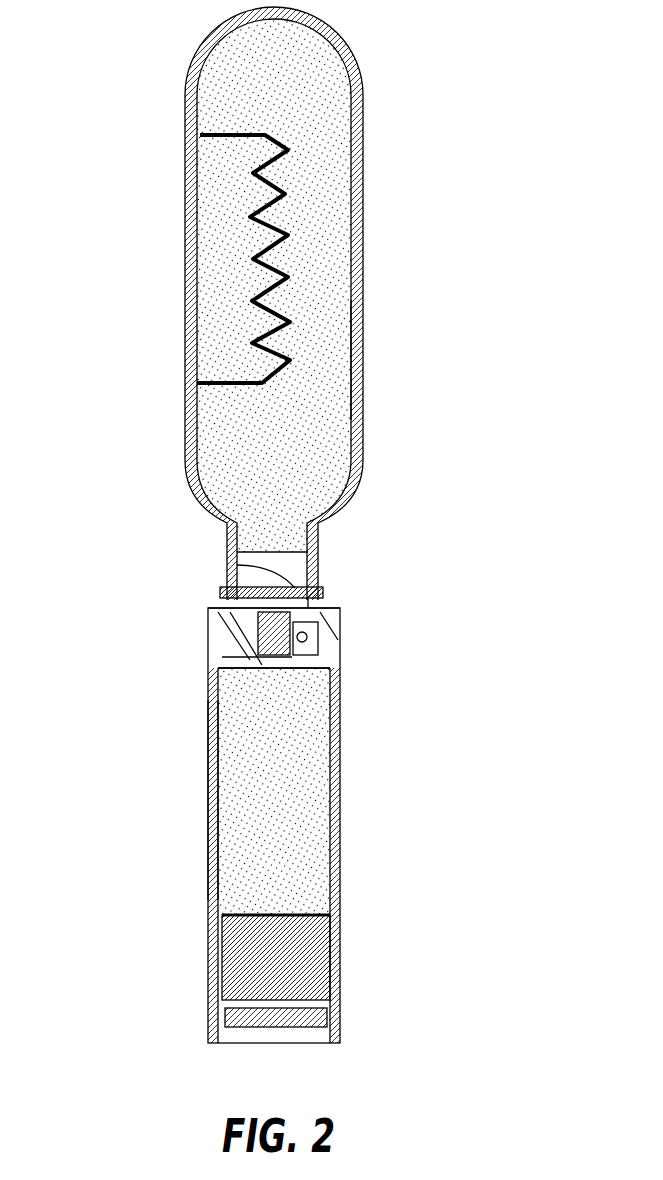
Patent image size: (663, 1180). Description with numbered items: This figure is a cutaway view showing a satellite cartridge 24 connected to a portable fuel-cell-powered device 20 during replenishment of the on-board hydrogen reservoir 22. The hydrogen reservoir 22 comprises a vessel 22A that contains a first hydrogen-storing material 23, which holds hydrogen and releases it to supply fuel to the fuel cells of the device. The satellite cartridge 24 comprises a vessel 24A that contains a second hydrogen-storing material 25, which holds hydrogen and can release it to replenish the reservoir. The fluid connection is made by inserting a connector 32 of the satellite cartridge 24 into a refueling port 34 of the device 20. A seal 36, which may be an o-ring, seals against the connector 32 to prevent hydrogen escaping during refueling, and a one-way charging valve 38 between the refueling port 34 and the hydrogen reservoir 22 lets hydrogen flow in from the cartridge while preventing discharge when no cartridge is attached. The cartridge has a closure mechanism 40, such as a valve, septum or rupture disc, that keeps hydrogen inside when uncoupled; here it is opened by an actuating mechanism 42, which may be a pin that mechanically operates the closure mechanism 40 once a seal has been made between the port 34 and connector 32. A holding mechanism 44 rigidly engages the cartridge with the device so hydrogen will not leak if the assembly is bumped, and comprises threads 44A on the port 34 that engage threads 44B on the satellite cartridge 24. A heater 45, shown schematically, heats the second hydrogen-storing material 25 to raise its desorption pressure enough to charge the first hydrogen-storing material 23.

The portable fuel-cell-powered device 20 is at (340, 870).
The on-board hydrogen reservoir 22 is at (210, 873).
The vessel 22A is at (208, 781).
The first hydrogen-storing material 23 is at (274, 791).
The satellite cartridge 24 is at (358, 292).
The vessel 24A is at (357, 430).
The second hydrogen-storing material 25 is at (274, 285).
The connector 32 is at (230, 568).
The refueling port 34 is at (205, 594).
The seal 36 is at (258, 635).
The one-way charging valve 38 is at (222, 657).
The closure mechanism 40 is at (295, 585).
The actuating mechanism 42 is at (320, 600).
The holding mechanism 44 is at (185, 603).
The threads 44A is at (300, 668).
The threads 44B is at (338, 618).
The heater 45 is at (252, 262).